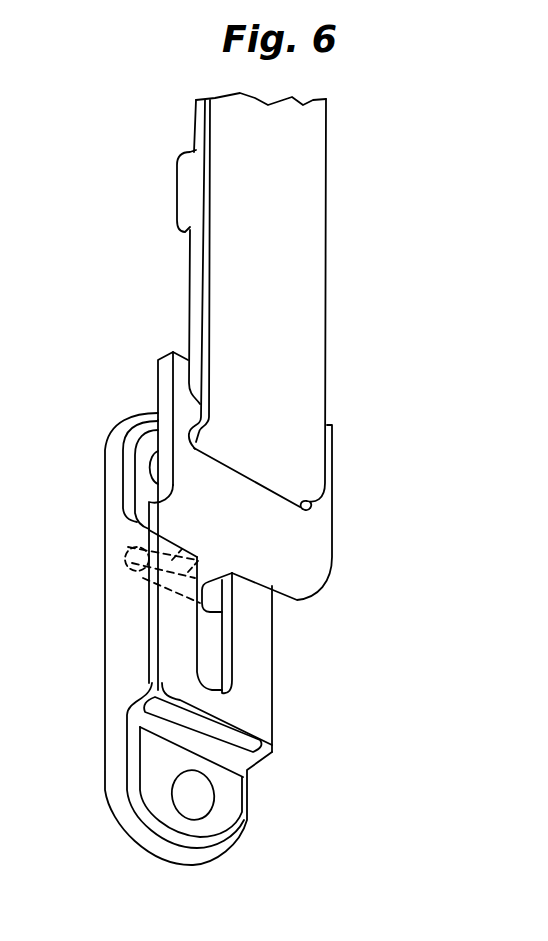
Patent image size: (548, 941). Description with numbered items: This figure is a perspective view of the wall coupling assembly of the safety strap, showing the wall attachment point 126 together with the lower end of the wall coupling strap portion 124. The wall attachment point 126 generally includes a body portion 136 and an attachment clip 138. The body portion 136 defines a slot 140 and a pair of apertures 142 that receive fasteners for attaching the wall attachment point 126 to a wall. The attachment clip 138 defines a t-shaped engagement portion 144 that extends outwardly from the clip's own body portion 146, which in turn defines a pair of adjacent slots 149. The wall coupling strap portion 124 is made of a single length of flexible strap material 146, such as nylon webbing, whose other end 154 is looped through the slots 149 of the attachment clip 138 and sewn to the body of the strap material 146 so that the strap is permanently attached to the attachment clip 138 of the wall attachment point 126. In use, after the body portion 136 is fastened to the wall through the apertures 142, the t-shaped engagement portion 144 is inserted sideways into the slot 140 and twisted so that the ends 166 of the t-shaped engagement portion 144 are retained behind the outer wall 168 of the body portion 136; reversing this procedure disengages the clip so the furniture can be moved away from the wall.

The wall coupling strap portion 124 is at (332, 285).
The wall attachment point 126 is at (273, 707).
The body portion 136 is at (118, 660).
The attachment clip 138 is at (333, 530).
The slot 140 is at (225, 647).
The apertures 142 is at (148, 468).
The t-shaped engagement portion 144 is at (138, 570).
The strap material 146 is at (326, 122).
The slots 149 is at (188, 420).
The other end 154 is at (187, 183).
The ends 166 is at (133, 545).
The outer wall 168 is at (243, 677).